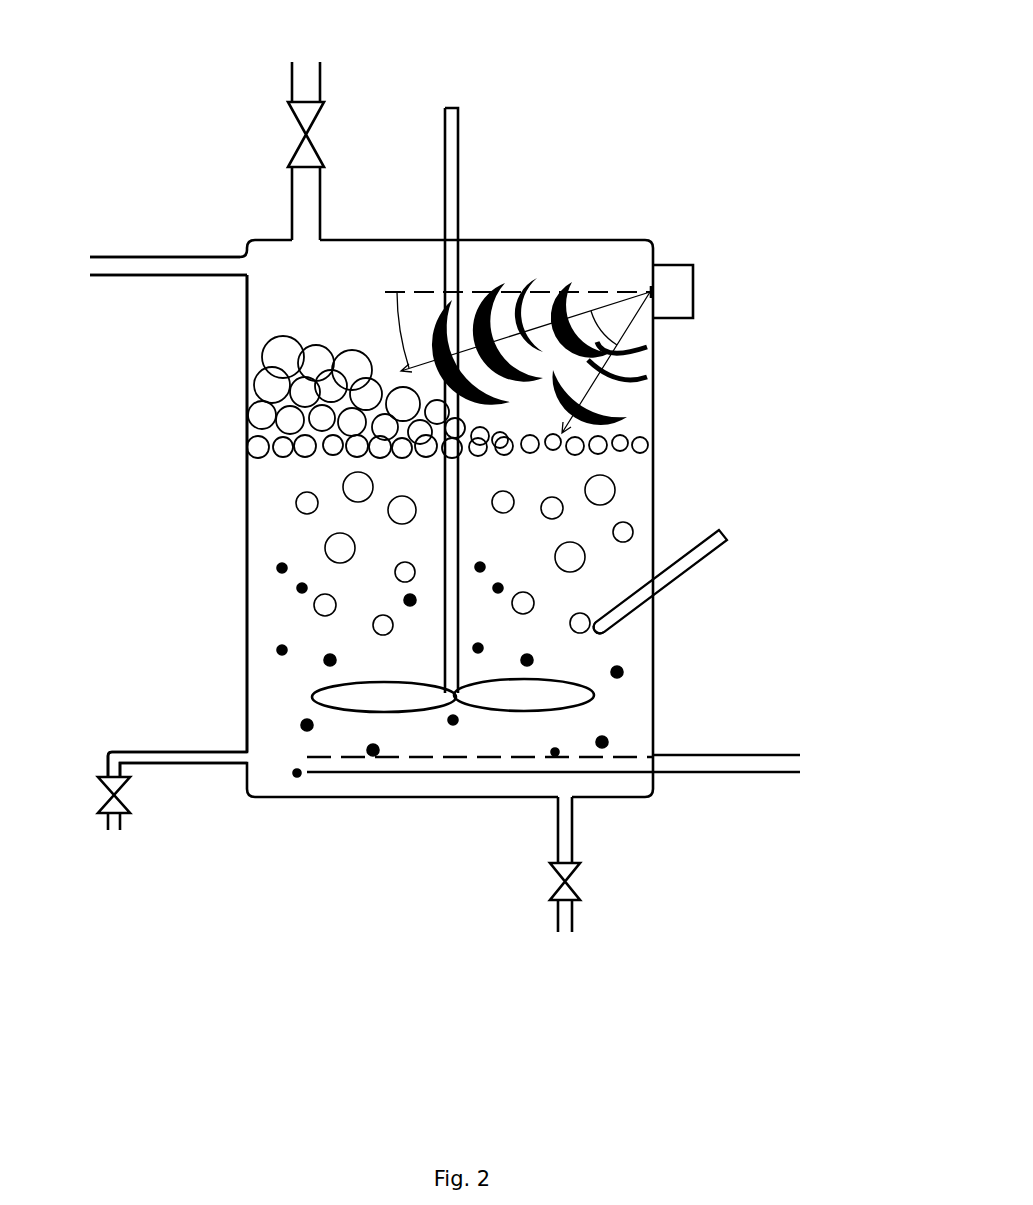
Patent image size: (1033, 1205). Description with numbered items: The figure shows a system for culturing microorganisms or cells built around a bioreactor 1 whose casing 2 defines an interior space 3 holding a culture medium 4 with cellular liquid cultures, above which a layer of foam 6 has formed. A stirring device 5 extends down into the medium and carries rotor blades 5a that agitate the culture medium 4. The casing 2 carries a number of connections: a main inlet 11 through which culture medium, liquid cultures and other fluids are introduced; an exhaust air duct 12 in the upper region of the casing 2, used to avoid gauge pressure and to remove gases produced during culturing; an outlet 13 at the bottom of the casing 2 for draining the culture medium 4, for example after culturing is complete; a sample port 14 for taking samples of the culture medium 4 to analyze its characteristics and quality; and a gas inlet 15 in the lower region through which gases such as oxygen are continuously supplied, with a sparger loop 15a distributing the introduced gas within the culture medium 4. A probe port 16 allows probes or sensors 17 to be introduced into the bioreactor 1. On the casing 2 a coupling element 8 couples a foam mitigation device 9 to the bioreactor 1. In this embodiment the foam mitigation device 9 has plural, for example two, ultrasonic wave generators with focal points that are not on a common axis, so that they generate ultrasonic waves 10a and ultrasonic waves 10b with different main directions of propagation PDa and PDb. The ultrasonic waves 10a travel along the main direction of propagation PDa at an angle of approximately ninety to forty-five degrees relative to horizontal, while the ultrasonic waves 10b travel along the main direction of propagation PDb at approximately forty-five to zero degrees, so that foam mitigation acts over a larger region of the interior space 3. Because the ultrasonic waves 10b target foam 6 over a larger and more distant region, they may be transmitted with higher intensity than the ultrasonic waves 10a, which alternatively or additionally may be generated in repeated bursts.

The bioreactor 1 is at (238, 236).
The casing 2 is at (245, 580).
The interior space 3 is at (333, 284).
The culture medium 4 is at (478, 744).
The stirring device 5 is at (455, 102).
The rotor blades 5a is at (385, 693).
The foam 6 is at (321, 351).
The coupling element 8 is at (651, 289).
The foam mitigation device 9 is at (692, 263).
The ultrasonic waves 10a is at (627, 395).
The ultrasonic waves 10b is at (522, 281).
The main inlet 11 is at (120, 257).
The exhaust air duct 12 is at (323, 190).
The outlet 13 is at (557, 825).
The sample port 14 is at (208, 752).
The gas inlet 15 is at (688, 753).
The sparger loop 15a is at (412, 762).
The probe port 16 is at (657, 593).
The probes/sensors 17 is at (607, 628).
The main direction of propagation PDa is at (625, 352).
The main direction of propagation PDb is at (598, 335).